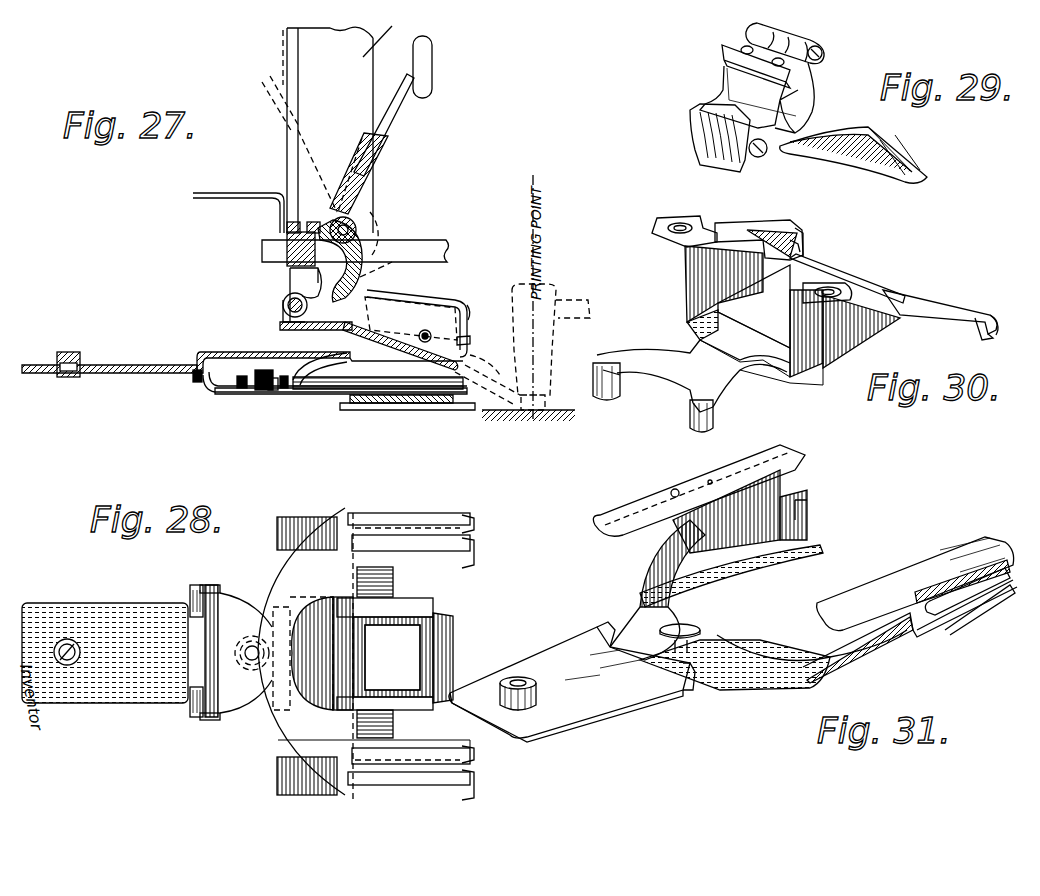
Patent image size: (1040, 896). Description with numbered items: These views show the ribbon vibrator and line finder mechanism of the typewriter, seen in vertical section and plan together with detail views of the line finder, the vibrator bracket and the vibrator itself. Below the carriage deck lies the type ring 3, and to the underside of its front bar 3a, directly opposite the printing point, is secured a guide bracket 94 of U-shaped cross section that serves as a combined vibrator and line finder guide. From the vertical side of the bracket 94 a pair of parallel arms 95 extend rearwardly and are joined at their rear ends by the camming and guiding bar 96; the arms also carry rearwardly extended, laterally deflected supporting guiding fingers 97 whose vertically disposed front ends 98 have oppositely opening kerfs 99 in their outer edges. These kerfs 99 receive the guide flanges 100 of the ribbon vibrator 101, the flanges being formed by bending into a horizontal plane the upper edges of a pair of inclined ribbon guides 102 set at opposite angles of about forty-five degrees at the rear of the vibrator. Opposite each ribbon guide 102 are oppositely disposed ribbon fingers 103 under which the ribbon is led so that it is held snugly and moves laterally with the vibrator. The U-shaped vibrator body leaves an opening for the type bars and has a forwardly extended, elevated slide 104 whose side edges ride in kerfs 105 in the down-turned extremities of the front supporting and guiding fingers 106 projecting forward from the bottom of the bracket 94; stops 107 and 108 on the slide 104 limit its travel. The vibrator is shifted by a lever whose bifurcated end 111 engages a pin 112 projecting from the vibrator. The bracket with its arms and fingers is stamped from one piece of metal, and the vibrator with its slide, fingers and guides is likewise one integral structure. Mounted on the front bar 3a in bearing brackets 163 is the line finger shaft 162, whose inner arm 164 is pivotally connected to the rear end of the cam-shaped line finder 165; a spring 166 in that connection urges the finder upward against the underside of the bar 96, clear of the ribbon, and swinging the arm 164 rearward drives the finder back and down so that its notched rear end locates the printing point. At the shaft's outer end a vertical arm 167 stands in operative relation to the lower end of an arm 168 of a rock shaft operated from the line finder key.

In FIG. 27, the type ring 3 is at (445, 248).
In FIG. 27, the front bar of the type ring 3a is at (292, 250).
In FIG. 27, the guide bracket 94 is at (300, 278).
In FIG. 30, the guide bracket 94 is at (688, 276).
In FIG. 28, the guide bracket 94 is at (322, 615).
In FIG. 27, the parallel arms 95 is at (408, 325).
In FIG. 30, the parallel arms 95 is at (772, 280).
In FIG. 28, the parallel arms 95 is at (430, 612).
In FIG. 27, the camming and guiding bar 96 is at (428, 332).
In FIG. 30, the camming and guiding bar 96 is at (848, 282).
In FIG. 28, the camming and guiding bar 96 is at (447, 625).
In FIG. 27, the supporting guiding fingers 97 is at (464, 302).
In FIG. 30, the supporting guiding fingers 97 is at (768, 226).
In FIG. 27, the vertically disposed front ends 98 is at (468, 312).
In FIG. 30, the vertically disposed front ends 98 is at (803, 242).
In FIG. 28, the vertically disposed front ends 98 is at (425, 525).
In FIG. 30, the kerfs 99 is at (800, 238).
In FIG. 27, the guide flanges 100 is at (470, 340).
In FIG. 28, the guide flanges 100 is at (278, 783).
In FIG. 31, the guide flanges 100 is at (808, 458).
In FIG. 27, the ribbon vibrator 101 is at (243, 392).
In FIG. 28, the ribbon vibrator 101 is at (268, 605).
In FIG. 31, the ribbon vibrator 101 is at (784, 665).
In FIG. 27, the inclined ribbon guides 102 is at (350, 385).
In FIG. 28, the inclined ribbon guides 102 is at (322, 540).
In FIG. 31, the inclined ribbon guides 102 is at (795, 492).
In FIG. 27, the ribbon fingers 103 is at (475, 400).
In FIG. 30, the ribbon fingers 103 is at (802, 400).
In FIG. 28, the ribbon fingers 103 is at (468, 542).
In FIG. 31, the ribbon fingers 103 is at (795, 462).
In FIG. 27, the slide 104 is at (138, 376).
In FIG. 28, the slide 104 is at (136, 700).
In FIG. 31, the slide 104 is at (598, 695).
In FIG. 27, the kerfs 105 is at (196, 358).
In FIG. 30, the kerfs 105 is at (690, 412).
In FIG. 27, the front supporting and guiding fingers 106 is at (196, 383).
In FIG. 30, the front supporting and guiding fingers 106 is at (607, 395).
In FIG. 28, the front supporting and guiding fingers 106 is at (192, 592).
In FIG. 27, the stop 107 is at (78, 355).
In FIG. 28, the stop 107 is at (72, 640).
In FIG. 31, the stop 107 is at (518, 680).
In FIG. 30, the stop 108 is at (720, 414).
In FIG. 28, the stop 108 is at (212, 588).
In FIG. 31, the stop 108 is at (597, 628).
In FIG. 27, the bifurcated end 111 is at (273, 392).
In FIG. 27, the pin 112 is at (258, 370).
In FIG. 28, the pin 112 is at (240, 653).
In FIG. 31, the pin 112 is at (700, 635).
In FIG. 27, the line finger shaft 162 is at (356, 223).
In FIG. 29, the line finger shaft 162 is at (822, 52).
In FIG. 27, the bearing brackets 163 is at (283, 229).
In FIG. 27, the arm 164 is at (360, 272).
In FIG. 29, the arm 164 is at (738, 76).
In FIG. 27, the line finder 165 is at (405, 350).
In FIG. 29, the line finder 165 is at (822, 158).
In FIG. 27, the spring 166 is at (282, 305).
In FIG. 29, the spring 166 is at (722, 150).
In FIG. 27, the arm 167 is at (380, 142).
In FIG. 27, the arm 168 is at (432, 82).